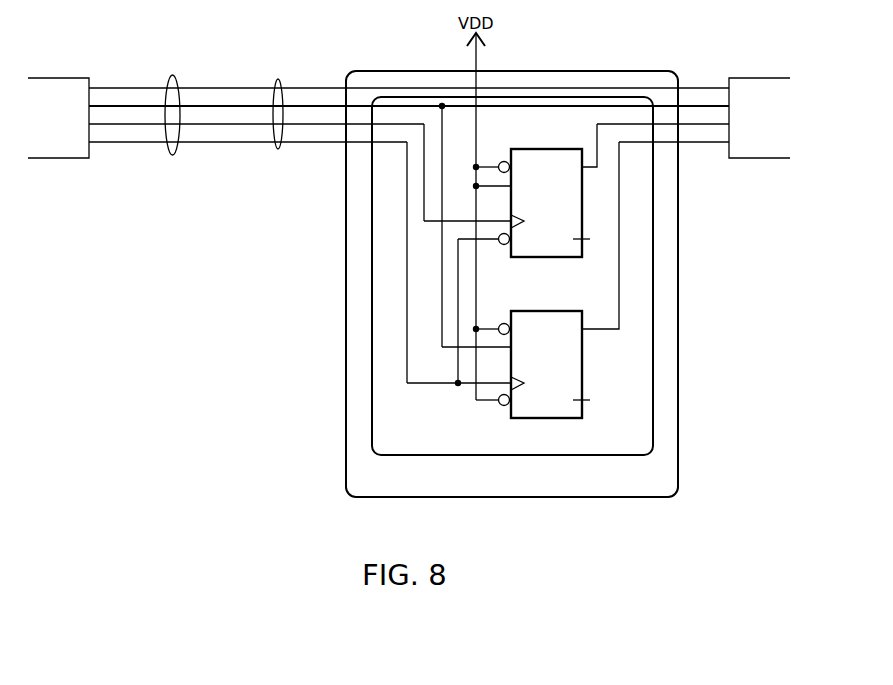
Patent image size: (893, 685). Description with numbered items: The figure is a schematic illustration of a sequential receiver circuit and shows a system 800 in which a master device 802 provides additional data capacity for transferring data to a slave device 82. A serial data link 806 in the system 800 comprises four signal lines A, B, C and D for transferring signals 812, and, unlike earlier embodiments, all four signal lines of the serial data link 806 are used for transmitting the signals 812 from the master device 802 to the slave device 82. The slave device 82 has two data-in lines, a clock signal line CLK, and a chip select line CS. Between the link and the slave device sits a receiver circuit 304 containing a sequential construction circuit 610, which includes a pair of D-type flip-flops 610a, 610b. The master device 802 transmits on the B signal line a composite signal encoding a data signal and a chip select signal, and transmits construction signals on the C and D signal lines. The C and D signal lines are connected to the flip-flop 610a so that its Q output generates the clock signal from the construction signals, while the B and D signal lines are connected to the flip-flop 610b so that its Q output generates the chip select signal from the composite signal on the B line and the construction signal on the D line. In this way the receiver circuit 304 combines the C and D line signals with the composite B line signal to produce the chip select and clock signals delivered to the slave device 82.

The system 800 is at (218, 284).
The master device 802 is at (58, 78).
The serial data link 806 is at (172, 77).
The signals 812 is at (278, 150).
The slave device 82 is at (760, 78).
The receiver circuit 304 is at (657, 488).
The sequential construction circuit 610 is at (632, 447).
The flip-flop 610a is at (567, 149).
The flip-flop 610b is at (568, 311).